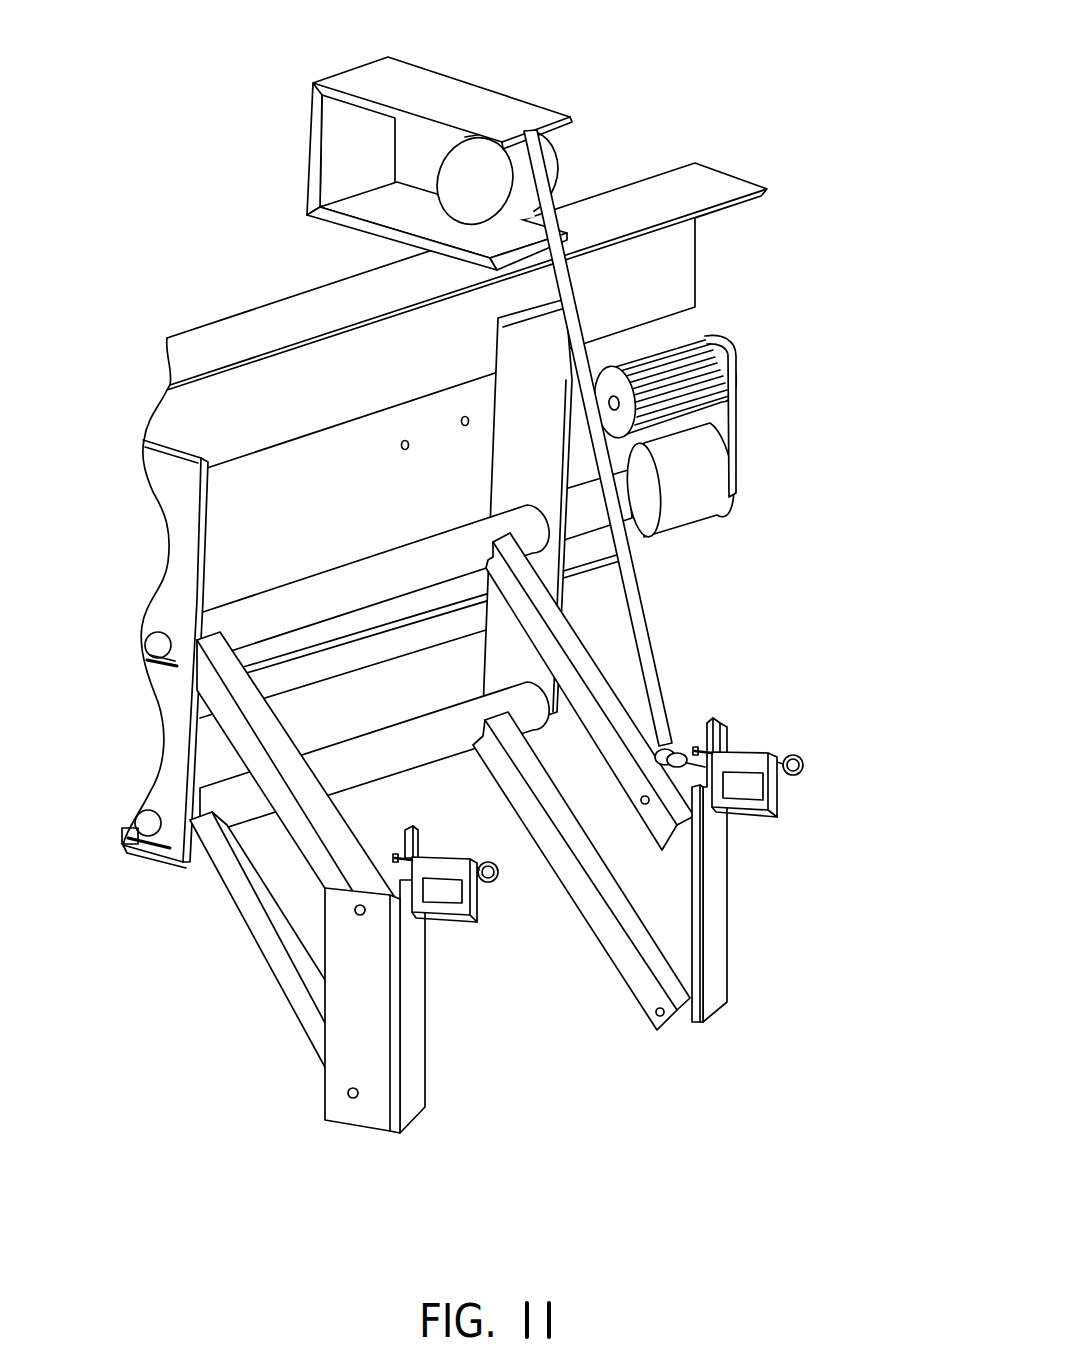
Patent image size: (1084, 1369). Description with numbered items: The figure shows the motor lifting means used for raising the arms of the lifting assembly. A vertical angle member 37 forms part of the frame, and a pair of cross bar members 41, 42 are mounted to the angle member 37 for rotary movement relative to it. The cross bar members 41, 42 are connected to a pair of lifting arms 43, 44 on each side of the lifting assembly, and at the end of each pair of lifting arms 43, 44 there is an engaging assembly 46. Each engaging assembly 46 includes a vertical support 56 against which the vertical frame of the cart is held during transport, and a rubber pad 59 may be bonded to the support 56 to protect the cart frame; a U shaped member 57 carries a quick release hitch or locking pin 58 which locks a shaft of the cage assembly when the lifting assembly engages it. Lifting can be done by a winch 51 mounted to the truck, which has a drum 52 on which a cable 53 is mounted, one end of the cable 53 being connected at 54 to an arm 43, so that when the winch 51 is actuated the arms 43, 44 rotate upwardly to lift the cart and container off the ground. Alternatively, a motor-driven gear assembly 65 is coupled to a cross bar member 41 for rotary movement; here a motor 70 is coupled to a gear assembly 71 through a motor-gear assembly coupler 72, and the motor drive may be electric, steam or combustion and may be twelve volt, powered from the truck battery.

The vertical angle member 37 is at (536, 463).
The cross bar member 41 is at (348, 578).
The cross bar member 42 is at (355, 752).
The lifting arm 43 is at (578, 658).
The lifting arm 44 is at (613, 950).
The engaging assembly 46 is at (536, 947).
The winch 51 is at (486, 141).
The drum 52 is at (553, 172).
The cable 53 is at (640, 628).
The cable connection 54 is at (683, 757).
The vertical support 56 is at (332, 1112).
The U shaped member 57 is at (473, 910).
The quick release hitch or locking pin 58 is at (433, 863).
The rubber pad 59 is at (413, 1017).
The motor-driven gear assembly 65 is at (746, 410).
The motor 70 is at (702, 333).
The gear assembly 71 is at (695, 522).
The motor-gear assembly coupler 72 is at (740, 404).